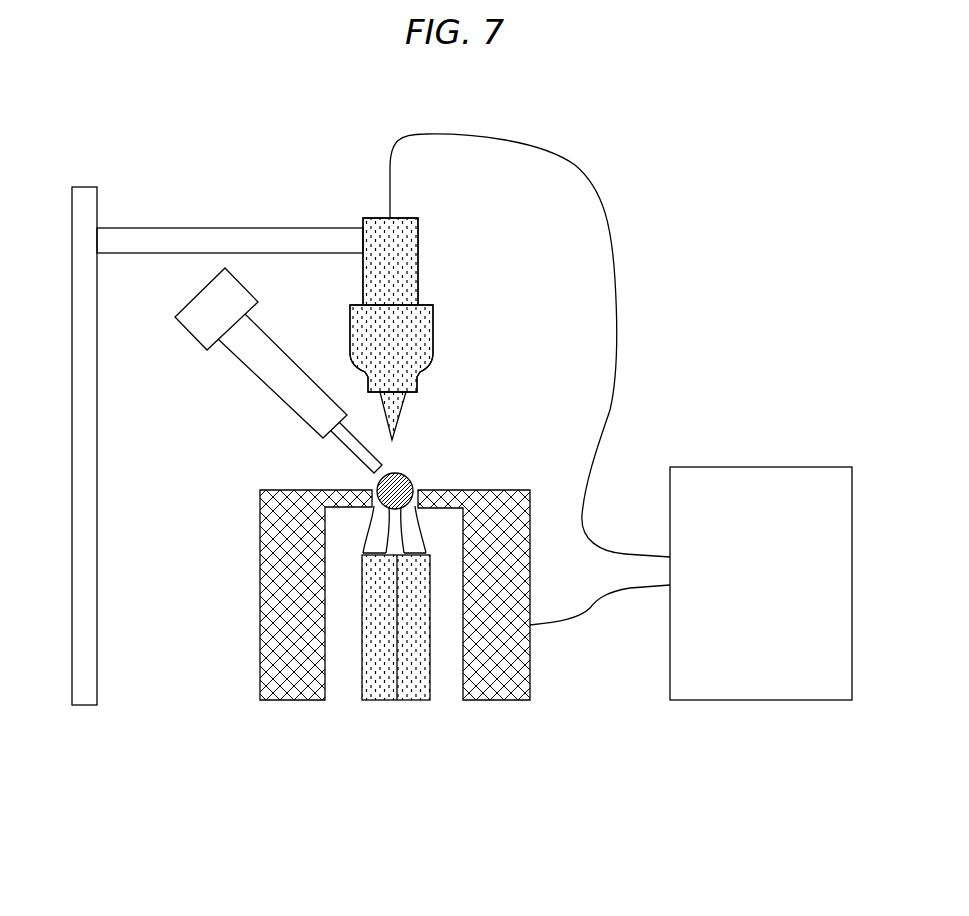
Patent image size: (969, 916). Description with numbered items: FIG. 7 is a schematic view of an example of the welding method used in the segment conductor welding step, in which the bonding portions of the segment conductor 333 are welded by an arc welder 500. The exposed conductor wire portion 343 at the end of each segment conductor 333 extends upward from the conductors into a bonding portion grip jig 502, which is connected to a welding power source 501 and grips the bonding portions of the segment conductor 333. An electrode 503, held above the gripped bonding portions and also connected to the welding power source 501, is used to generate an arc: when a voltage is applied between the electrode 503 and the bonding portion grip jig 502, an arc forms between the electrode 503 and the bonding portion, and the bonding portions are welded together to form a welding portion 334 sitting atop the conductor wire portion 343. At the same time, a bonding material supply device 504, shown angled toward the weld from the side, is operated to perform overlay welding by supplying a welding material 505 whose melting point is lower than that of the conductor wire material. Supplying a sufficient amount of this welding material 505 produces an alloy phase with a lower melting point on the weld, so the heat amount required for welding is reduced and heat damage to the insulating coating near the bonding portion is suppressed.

The arc welder 500 is at (702, 196).
The welding power source 501 is at (755, 479).
The bonding portion grip jig 502 is at (497, 490).
The electrode 503 is at (378, 217).
The bonding material supply device 504 is at (200, 330).
The welding material 505 is at (368, 463).
The welding portion 334 is at (407, 481).
The conductor wire portion 343 is at (370, 522).
The segment conductor 333 is at (373, 702).